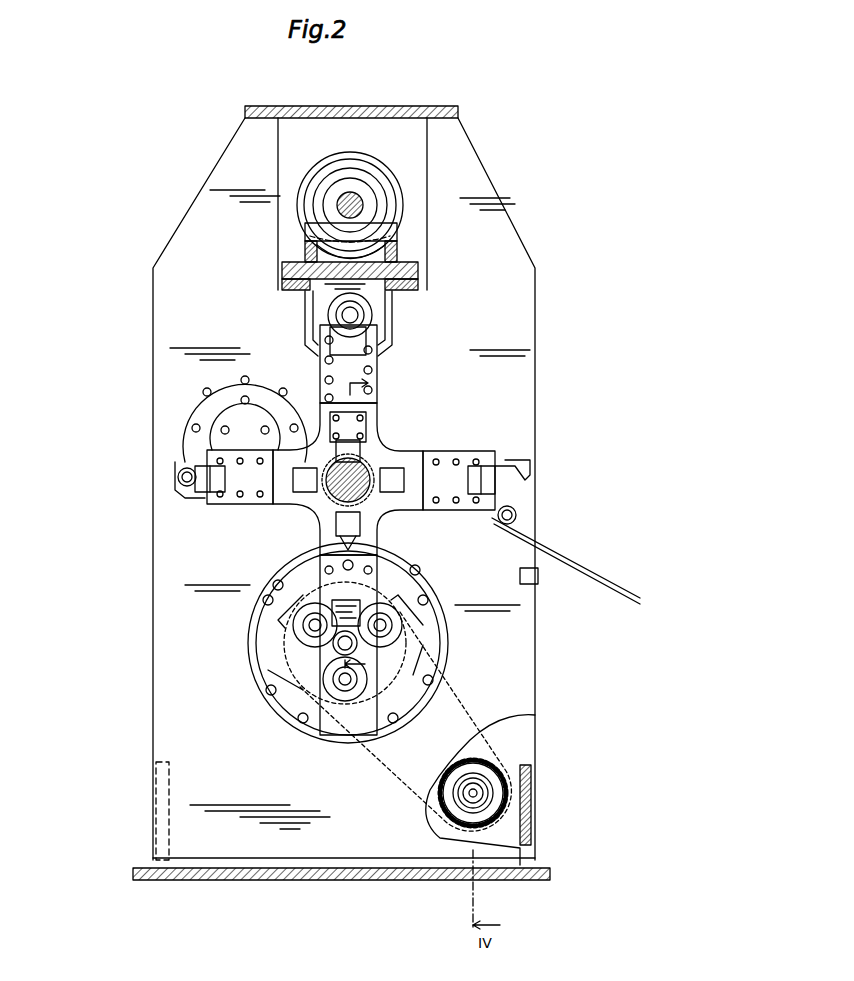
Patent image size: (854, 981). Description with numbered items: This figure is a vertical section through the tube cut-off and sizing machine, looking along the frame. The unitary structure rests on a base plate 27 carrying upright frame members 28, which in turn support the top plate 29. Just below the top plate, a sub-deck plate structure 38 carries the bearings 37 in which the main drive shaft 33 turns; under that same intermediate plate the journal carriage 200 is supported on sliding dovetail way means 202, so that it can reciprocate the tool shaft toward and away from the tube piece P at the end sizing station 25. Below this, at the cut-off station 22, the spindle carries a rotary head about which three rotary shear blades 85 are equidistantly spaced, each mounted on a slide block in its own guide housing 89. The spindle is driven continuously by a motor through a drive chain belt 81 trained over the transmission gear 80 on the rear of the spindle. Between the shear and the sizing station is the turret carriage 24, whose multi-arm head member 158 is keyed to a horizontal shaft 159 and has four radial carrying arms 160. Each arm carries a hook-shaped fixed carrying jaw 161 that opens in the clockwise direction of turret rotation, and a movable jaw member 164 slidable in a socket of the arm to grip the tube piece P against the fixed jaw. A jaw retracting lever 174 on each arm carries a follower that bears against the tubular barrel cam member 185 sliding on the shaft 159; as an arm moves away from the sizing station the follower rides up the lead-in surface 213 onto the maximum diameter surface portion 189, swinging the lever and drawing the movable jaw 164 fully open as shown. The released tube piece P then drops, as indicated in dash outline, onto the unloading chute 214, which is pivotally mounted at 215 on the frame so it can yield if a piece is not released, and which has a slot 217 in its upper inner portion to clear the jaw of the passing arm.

The cut-off station 22 is at (244, 694).
The turret carriage 24 is at (261, 547).
The end sizing station 25 is at (481, 399).
The base plate 27 is at (548, 868).
The frame members 28 is at (153, 740).
The top plate 29 is at (452, 106).
The drive shaft 33 is at (362, 198).
The bearings 37 is at (347, 198).
The sub-deck plate structure 38 is at (420, 276).
The transmission gear 80 is at (405, 658).
The drive chain belt 81 is at (478, 747).
The rotary shear blades 85 is at (330, 687).
The guide housing 89 is at (372, 622).
The multi-arm head member 158 is at (484, 449).
The shaft 159 is at (368, 462).
The carrying arms 160 is at (320, 384).
The fixed carrying jaw 161 is at (340, 310).
The movable jaw members 164 is at (200, 474).
The jaw retracting levers 174 is at (330, 442).
The tubular barrel cam member 185 is at (285, 502).
The maximum diameter surface portion 189 is at (449, 484).
The journal carriage 200 is at (372, 314).
The sliding dovetail way means 202 is at (335, 302).
The lead-in surface 213 is at (362, 470).
The unloading chute 214 is at (603, 580).
The pivot 215 is at (600, 597).
The slot 217 is at (512, 532).
The tube piece P is at (178, 477).